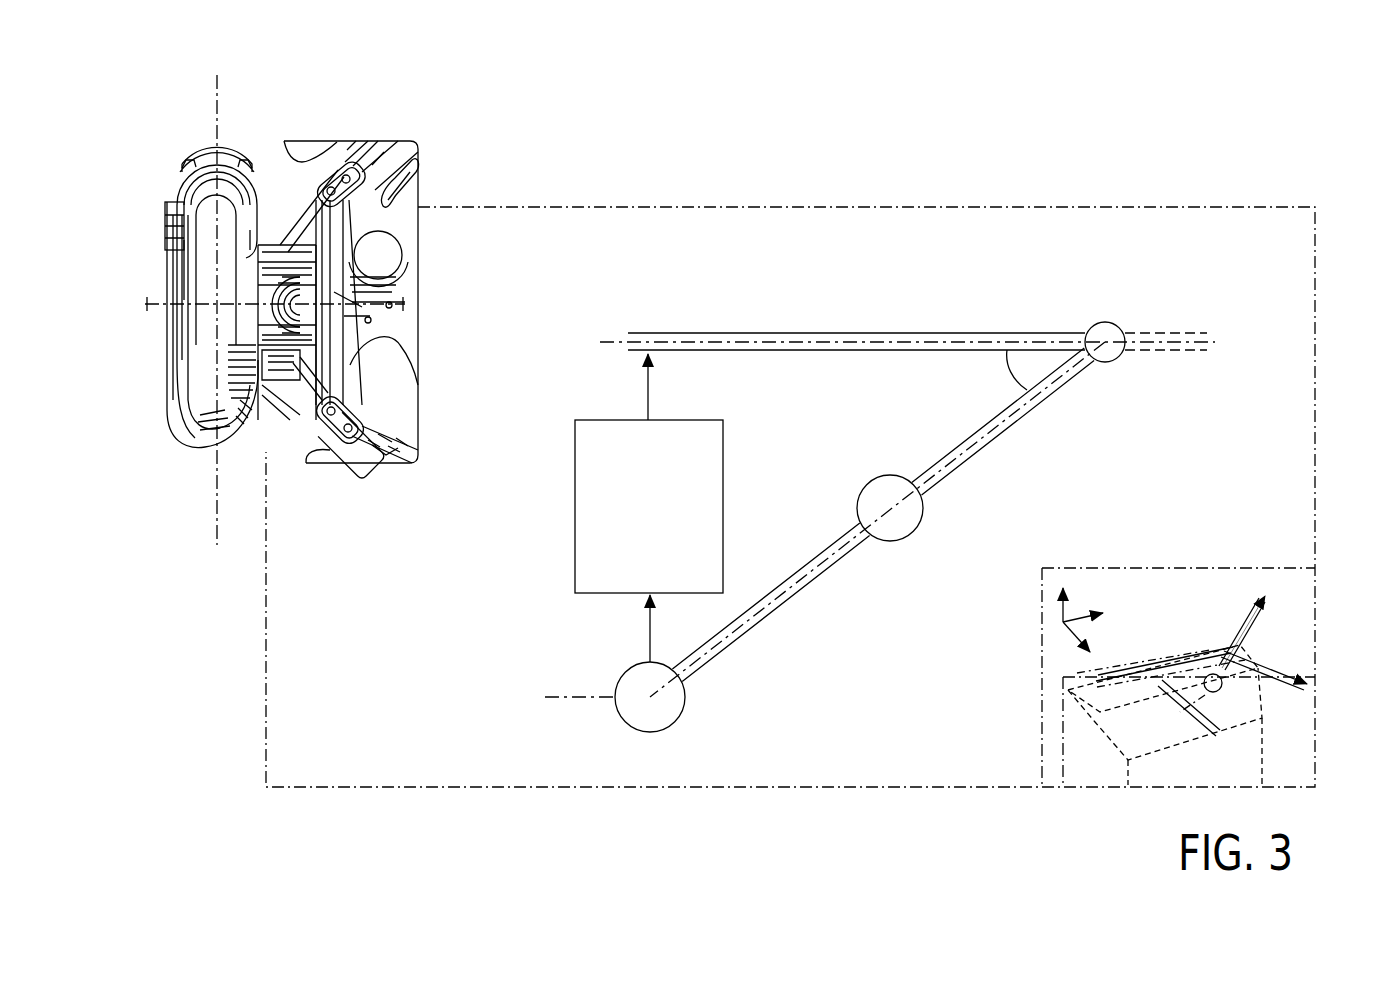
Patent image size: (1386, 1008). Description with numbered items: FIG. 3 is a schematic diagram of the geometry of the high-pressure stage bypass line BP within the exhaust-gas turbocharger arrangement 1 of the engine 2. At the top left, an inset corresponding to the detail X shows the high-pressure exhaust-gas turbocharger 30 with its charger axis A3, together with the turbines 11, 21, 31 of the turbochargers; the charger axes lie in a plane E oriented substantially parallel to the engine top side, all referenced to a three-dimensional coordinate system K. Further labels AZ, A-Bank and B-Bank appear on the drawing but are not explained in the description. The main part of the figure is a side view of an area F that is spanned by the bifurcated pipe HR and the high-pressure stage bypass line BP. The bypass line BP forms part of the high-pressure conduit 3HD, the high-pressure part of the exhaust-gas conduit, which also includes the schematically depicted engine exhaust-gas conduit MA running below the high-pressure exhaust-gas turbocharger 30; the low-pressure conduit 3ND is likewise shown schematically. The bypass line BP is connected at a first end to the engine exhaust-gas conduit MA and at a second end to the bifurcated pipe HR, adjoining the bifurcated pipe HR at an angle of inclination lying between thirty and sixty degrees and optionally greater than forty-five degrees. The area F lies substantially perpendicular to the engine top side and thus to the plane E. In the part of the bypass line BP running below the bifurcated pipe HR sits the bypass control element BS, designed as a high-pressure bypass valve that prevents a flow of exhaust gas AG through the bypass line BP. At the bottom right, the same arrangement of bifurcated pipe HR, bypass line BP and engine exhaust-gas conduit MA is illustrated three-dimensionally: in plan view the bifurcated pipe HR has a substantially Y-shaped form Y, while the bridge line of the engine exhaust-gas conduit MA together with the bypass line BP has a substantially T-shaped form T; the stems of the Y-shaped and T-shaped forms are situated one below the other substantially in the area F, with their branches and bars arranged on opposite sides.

The exhaust-gas turbocharger arrangement 1 is at (347, 113).
The engine 2 is at (1090, 737).
The turbine 11 is at (407, 232).
The turbine 21 is at (405, 385).
The high-pressure exhaust-gas turbocharger 30 is at (571, 495).
The turbine 31 is at (190, 272).
The compressor housing inlet AZ is at (182, 177).
The bypass control element BS is at (283, 237).
The high-pressure stage bypass line BP is at (372, 318).
The bifurcated pipe HR is at (866, 330).
The engine exhaust-gas conduit MA is at (217, 518).
The exhaust gas AG is at (646, 392).
The charger axis A3 is at (400, 302).
The T-shaped form T is at (230, 315).
The area F is at (1272, 222).
The three-dimensional coordinate system K is at (1068, 592).
The plane E is at (1070, 640).
The Y-shaped form Y is at (1253, 628).
The detail X is at (430, 112).
The low-pressure conduit 3ND is at (680, 318).
The high-pressure conduit 3HD is at (825, 675).
The cylinder bank A A-Bank is at (1100, 672).
The cylinder bank B B-Bank is at (1182, 726).